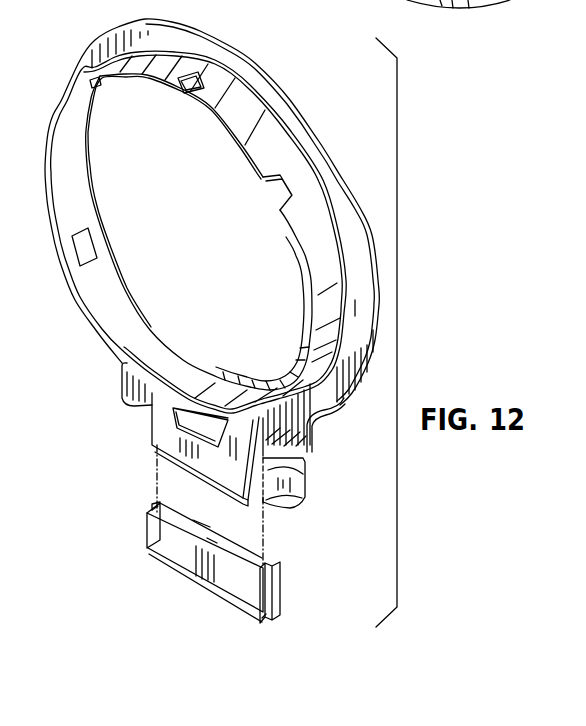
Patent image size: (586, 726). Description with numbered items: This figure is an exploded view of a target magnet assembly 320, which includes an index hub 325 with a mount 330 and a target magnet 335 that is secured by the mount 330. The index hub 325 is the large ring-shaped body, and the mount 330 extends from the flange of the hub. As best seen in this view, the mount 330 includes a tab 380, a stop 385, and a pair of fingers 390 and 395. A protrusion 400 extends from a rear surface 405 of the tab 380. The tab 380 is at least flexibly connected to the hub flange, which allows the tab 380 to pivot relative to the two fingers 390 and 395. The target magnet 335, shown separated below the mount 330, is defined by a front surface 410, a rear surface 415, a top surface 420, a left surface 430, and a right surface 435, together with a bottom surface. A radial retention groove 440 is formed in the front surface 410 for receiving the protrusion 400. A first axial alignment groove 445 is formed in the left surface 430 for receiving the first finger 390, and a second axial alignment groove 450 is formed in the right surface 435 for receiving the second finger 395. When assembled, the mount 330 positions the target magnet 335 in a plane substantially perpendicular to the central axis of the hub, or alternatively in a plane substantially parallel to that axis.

The target magnet assembly 320 is at (283, 57).
The index hub 325 is at (272, 144).
The mount 330 is at (204, 437).
The target magnet 335 is at (227, 540).
The tab 380 is at (157, 425).
The stop 385 is at (208, 410).
The first finger 390 is at (128, 403).
The second finger 395 is at (288, 480).
The protrusion 400 is at (285, 502).
The rear surface 405 is at (252, 462).
The front surface 410 is at (147, 553).
The rear surface 415 is at (193, 508).
The top surface 420 is at (160, 498).
The left surface 430 is at (146, 518).
The right surface 435 is at (278, 590).
The radial retention groove 440 is at (192, 580).
The first axial alignment groove 445 is at (152, 505).
The second axial alignment groove 450 is at (279, 620).